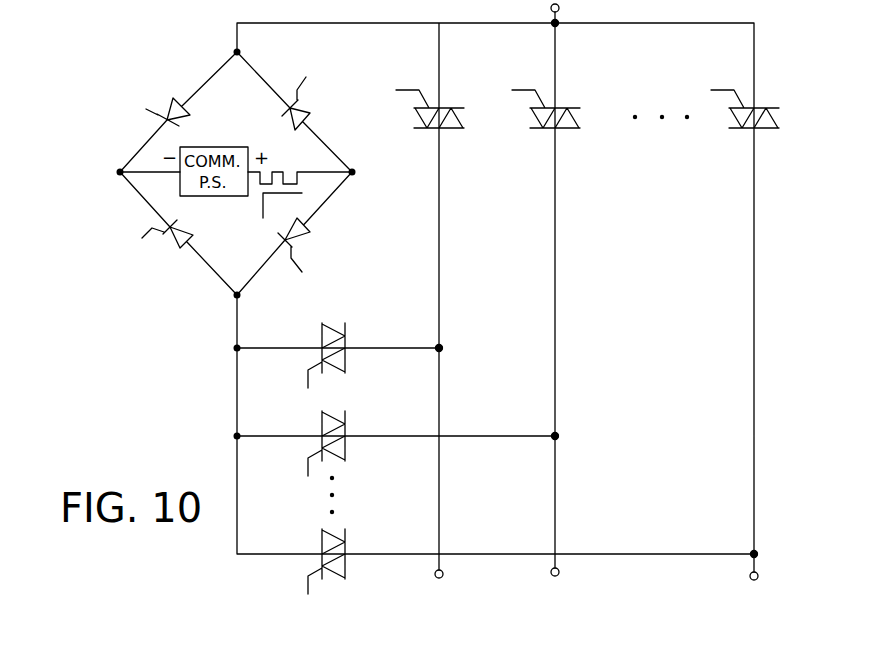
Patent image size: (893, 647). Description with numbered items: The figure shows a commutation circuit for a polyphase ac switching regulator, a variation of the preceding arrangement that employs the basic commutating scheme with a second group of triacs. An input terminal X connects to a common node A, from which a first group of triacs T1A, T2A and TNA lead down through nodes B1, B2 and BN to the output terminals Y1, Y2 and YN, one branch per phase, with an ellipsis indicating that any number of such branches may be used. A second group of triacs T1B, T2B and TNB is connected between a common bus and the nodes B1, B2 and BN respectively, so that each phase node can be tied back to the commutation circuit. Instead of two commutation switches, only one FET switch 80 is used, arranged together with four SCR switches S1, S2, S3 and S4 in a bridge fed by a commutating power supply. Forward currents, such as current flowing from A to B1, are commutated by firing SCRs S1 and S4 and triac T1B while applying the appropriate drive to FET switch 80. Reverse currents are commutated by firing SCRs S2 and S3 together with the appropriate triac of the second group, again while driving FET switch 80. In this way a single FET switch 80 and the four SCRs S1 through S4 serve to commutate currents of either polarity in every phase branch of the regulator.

The SCR switch S1 is at (178, 112).
The SCR switch S2 is at (178, 233).
The SCR switch S3 is at (294, 112).
The SCR switch S4 is at (294, 233).
The FET switch 80 is at (276, 150).
The triac T1A is at (441, 123).
The triac T2A is at (558, 123).
The triac TNA is at (758, 123).
The triac T1B is at (349, 355).
The triac T2B is at (350, 443).
The triac TNB is at (351, 561).
The terminal X is at (563, 11).
The node A is at (557, 25).
The node B1 is at (440, 346).
The node B2 is at (556, 434).
The node BN is at (755, 552).
The terminal Y1 is at (452, 575).
The terminal Y2 is at (568, 573).
The terminal YN is at (768, 573).